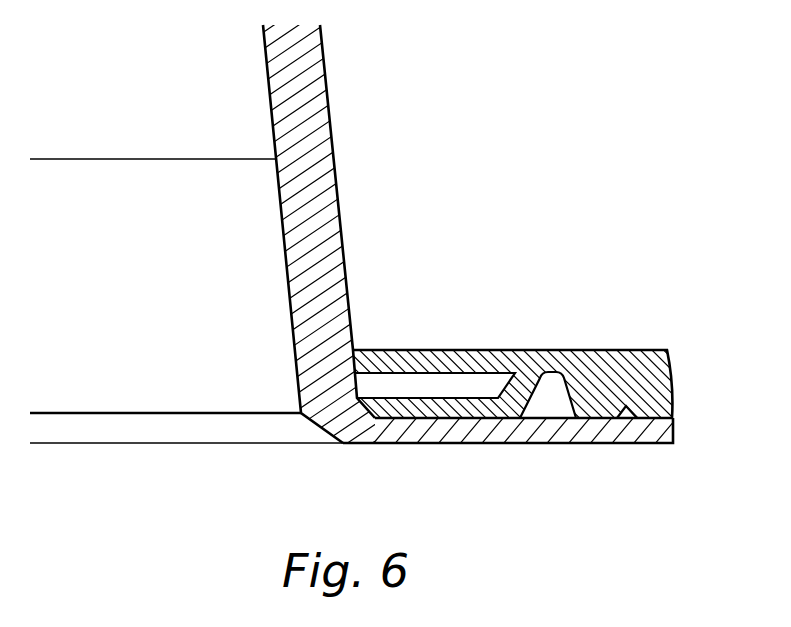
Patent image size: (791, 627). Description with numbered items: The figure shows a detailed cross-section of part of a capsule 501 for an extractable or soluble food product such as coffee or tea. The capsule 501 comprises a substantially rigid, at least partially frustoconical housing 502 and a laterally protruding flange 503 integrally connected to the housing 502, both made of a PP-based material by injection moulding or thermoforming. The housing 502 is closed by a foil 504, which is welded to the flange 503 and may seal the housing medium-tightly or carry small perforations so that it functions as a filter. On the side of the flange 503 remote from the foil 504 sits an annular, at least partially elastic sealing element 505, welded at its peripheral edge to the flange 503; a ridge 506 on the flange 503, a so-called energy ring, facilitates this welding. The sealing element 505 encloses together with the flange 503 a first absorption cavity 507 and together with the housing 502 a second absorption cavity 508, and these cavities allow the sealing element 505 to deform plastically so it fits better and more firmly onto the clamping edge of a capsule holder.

The capsule 501 is at (367, 51).
The housing 502 is at (315, 158).
The flange 503 is at (496, 432).
The foil 504 is at (210, 447).
The sealing element 505 is at (622, 365).
The ridge 506 is at (627, 417).
The first absorption cavity 507 is at (552, 390).
The second absorption cavity 508 is at (428, 388).